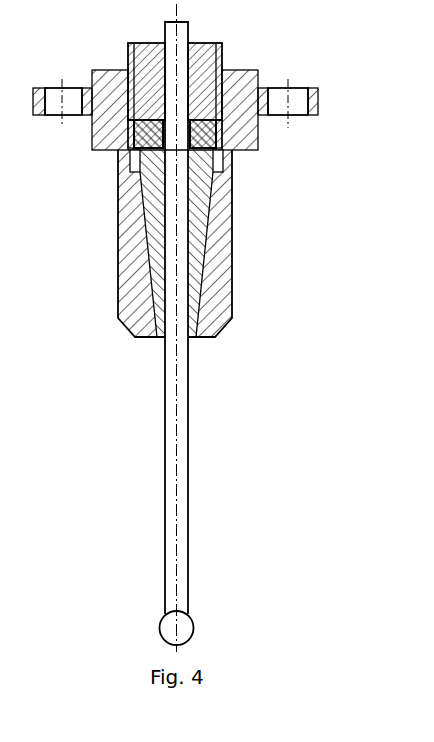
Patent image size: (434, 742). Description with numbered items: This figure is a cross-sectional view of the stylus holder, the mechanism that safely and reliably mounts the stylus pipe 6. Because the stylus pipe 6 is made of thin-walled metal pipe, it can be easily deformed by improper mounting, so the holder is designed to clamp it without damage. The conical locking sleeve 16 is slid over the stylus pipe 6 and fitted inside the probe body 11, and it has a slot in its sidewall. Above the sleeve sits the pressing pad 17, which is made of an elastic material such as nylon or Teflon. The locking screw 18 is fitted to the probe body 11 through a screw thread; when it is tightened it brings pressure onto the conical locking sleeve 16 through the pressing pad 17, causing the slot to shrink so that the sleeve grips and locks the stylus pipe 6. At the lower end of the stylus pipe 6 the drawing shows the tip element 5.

The locking screw 18 is at (205, 58).
The pressing pad 17 is at (202, 137).
The conical locking sleeve 16 is at (195, 220).
The probe body 11 is at (222, 282).
The stylus pipe 6 is at (183, 475).
The probe ball 5 is at (183, 625).